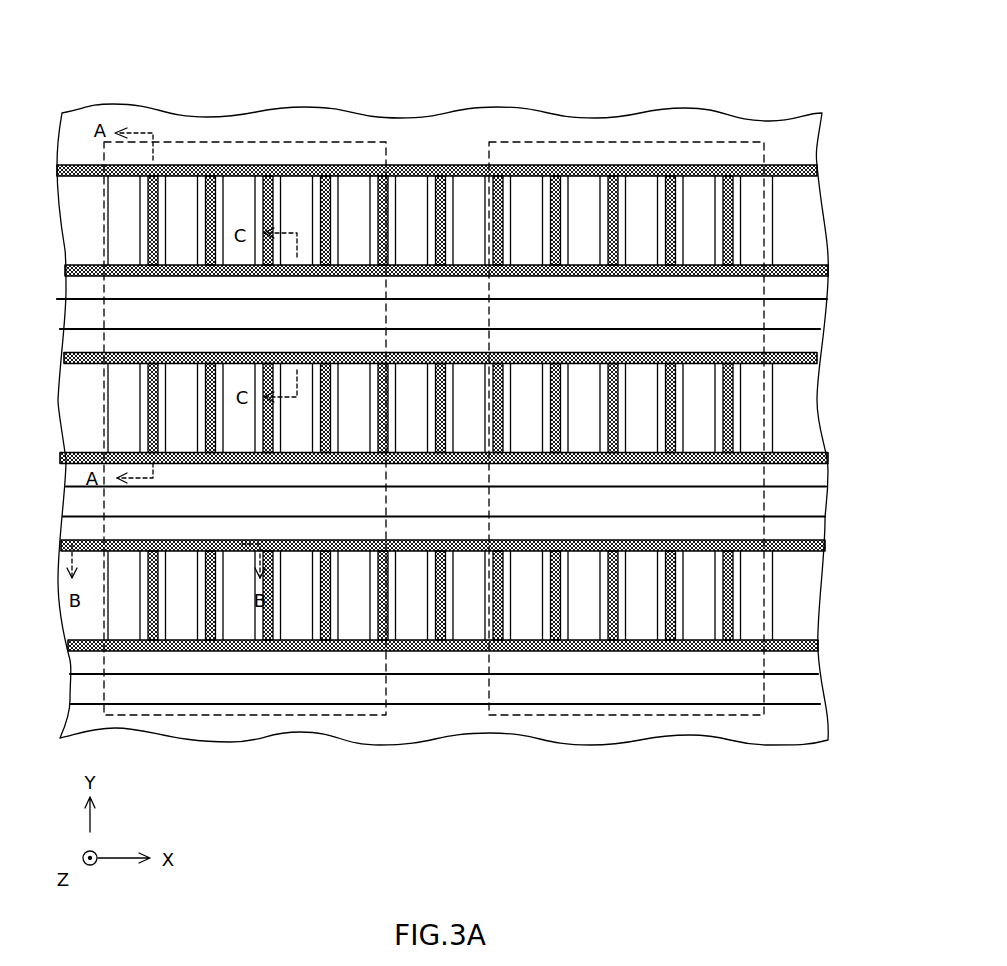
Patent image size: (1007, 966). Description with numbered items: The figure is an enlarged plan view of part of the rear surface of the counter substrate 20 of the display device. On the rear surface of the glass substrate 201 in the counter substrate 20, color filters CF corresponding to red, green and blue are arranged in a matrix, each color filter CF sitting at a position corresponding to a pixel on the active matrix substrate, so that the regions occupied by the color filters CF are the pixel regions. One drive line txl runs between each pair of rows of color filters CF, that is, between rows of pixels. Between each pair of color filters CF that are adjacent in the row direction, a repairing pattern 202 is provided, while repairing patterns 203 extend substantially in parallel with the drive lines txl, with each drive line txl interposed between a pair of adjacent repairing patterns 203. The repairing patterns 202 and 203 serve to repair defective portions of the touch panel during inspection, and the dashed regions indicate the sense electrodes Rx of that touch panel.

The counter substrate 20 is at (453, 380).
The glass substrate 201 is at (822, 112).
The repairing pattern 202 is at (441, 192).
The repairing pattern 203 is at (805, 170).
The sense electrode Rx is at (290, 142).
The color filter CF is at (770, 220).
The drive line txl is at (805, 314).